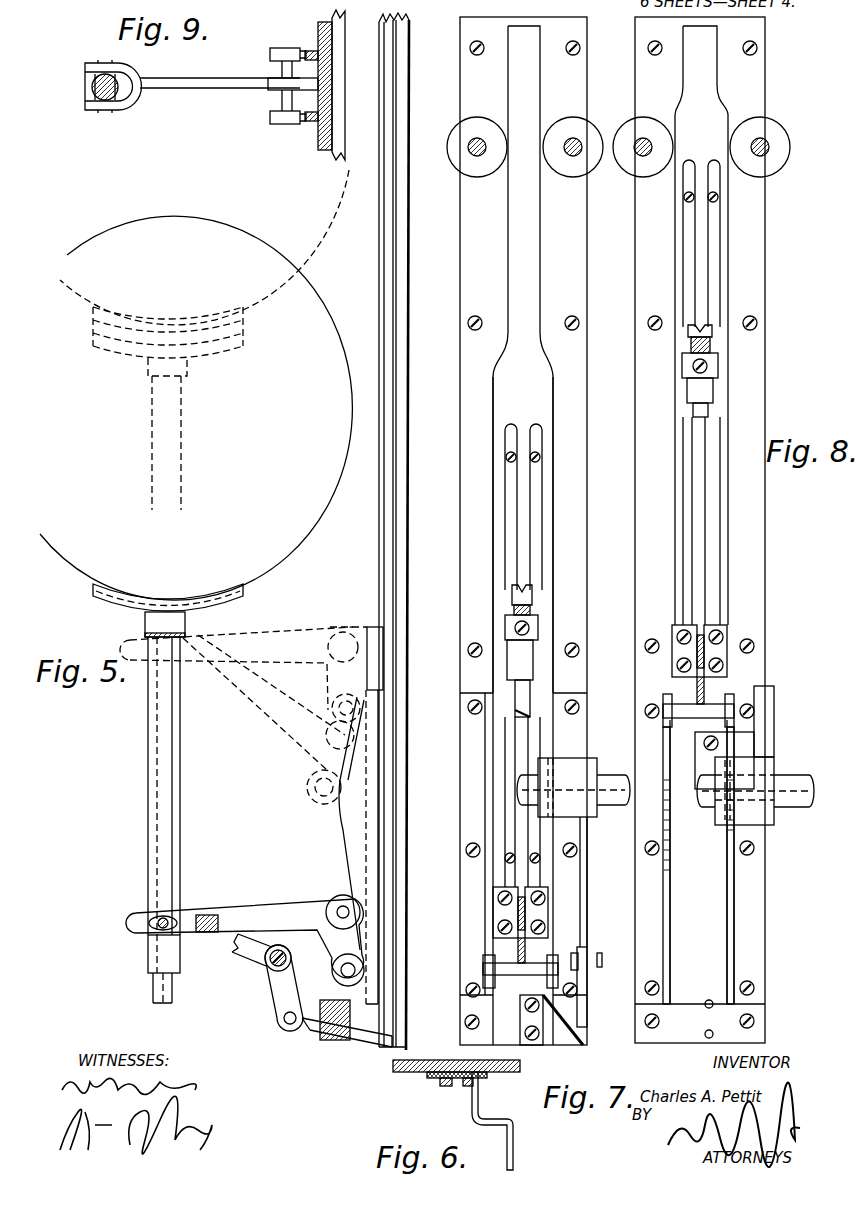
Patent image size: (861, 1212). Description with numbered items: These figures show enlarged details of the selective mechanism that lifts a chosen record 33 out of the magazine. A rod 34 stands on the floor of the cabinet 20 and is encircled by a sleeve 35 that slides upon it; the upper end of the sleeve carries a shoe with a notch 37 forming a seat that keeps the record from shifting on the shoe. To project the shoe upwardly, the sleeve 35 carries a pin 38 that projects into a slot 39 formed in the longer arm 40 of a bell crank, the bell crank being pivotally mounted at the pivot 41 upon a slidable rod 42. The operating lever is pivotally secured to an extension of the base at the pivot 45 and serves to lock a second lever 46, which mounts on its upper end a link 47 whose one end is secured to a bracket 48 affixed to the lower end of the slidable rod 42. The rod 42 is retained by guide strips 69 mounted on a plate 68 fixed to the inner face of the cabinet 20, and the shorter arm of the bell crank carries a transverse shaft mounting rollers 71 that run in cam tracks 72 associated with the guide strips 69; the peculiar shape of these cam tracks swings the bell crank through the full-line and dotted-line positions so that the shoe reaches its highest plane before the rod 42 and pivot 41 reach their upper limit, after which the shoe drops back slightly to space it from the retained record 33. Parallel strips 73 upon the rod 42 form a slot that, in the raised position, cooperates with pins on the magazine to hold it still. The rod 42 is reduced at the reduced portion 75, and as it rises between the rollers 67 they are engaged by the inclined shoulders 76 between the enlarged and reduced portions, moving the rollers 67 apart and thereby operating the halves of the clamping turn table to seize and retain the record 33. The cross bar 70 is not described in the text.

In FIG. 5, the cabinet 20 is at (410, 300).
In FIG. 5, the record 33 is at (283, 540).
In FIG. 9, the rod 34 is at (112, 100).
In FIG. 5, the rod 34 is at (165, 993).
In FIG. 8, the rod 34 is at (695, 412).
In FIG. 9, the sleeve 35 is at (92, 88).
In FIG. 5, the sleeve 35 is at (160, 845).
In FIG. 7, the sleeve 35 is at (506, 661).
In FIG. 8, the sleeve 35 is at (688, 392).
In FIG. 7, the notch 37 is at (535, 593).
In FIG. 8, the notch 37 is at (712, 340).
In FIG. 9, the pin 38 is at (110, 63).
In FIG. 5, the pin 38 is at (157, 913).
In FIG. 5, the slot 39 is at (153, 927).
In FIG. 9, the longer arm 40 is at (190, 88).
In FIG. 5, the longer arm 40 is at (265, 702).
In FIG. 8, the longer arm 40 is at (672, 638).
In FIG. 5, the pivot 41 is at (343, 906).
In FIG. 9, the slidable rod 42 is at (333, 62).
In FIG. 5, the slidable rod 42 is at (382, 383).
In FIG. 7, the slidable rod 42 is at (575, 1054).
In FIG. 6, the slidable rod 42 is at (430, 1076).
In FIG. 8, the pivot 45 is at (786, 808).
In FIG. 5, the second lever 46 is at (247, 953).
In FIG. 7, the second lever 46 is at (591, 885).
In FIG. 8, the second lever 46 is at (765, 741).
In FIG. 5, the link 47 is at (278, 985).
In FIG. 7, the link 47 is at (588, 1000).
In FIG. 8, the link 47 is at (775, 715).
In FIG. 5, the bracket 48 is at (322, 1030).
In FIG. 6, the bracket 48 is at (514, 1135).
In FIG. 7, the rollers 67 is at (447, 147).
In FIG. 8, the rollers 67 is at (773, 132).
In FIG. 7, the plate 68 is at (577, 249).
In FIG. 8, the plate 68 is at (755, 1012).
In FIG. 6, the plate 68 is at (393, 1068).
In FIG. 8, the guide strips 69 is at (746, 915).
In FIG. 7, the cross bar 70 is at (518, 976).
In FIG. 9, the rollers 71 is at (283, 52).
In FIG. 7, the rollers 71 is at (483, 963).
In FIG. 8, the rollers 71 is at (663, 708).
In FIG. 5, the cam tracks 72 is at (343, 817).
In FIG. 8, the cam tracks 72 is at (672, 886).
In FIG. 7, the parallel strips 73 is at (545, 486).
In FIG. 8, the parallel strips 73 is at (712, 233).
In FIG. 6, the parallel strips 73 is at (440, 1084).
In FIG. 7, the reduced portion 75 is at (512, 209).
In FIG. 8, the reduced portion 75 is at (706, 106).
In FIG. 7, the inclined shoulders 76 is at (553, 358).
In FIG. 8, the inclined shoulders 76 is at (687, 105).